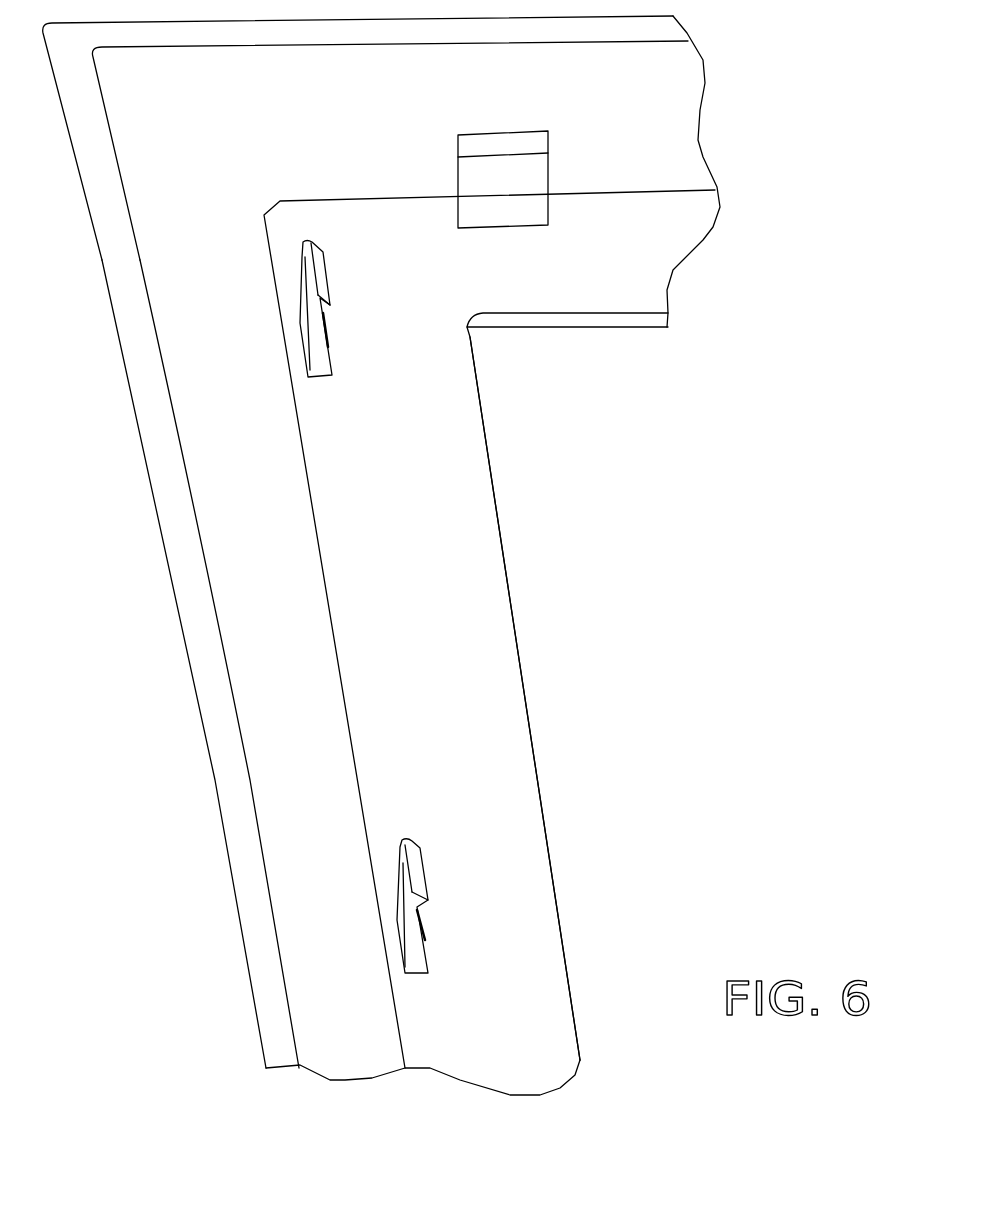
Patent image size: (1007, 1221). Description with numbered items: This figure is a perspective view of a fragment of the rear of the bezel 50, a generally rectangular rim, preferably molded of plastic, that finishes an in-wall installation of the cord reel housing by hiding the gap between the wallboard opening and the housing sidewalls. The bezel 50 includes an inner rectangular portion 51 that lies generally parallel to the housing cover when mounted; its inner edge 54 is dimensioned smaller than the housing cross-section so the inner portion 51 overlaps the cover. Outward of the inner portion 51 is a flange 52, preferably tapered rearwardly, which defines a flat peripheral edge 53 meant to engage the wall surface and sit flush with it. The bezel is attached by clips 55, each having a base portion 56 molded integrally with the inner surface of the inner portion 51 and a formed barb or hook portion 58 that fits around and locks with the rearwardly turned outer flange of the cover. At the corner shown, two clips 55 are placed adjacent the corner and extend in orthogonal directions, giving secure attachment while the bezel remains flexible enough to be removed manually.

The bezel 50 is at (381, 555).
The inner rectangular portion 51 is at (462, 592).
The flange 52 is at (332, 873).
The flat peripheral edge 53 is at (158, 438).
The inner edge 54 is at (522, 705).
The clip 55 is at (548, 160).
The base portion 56 is at (313, 333).
The barb or hook portion 58 is at (423, 870).